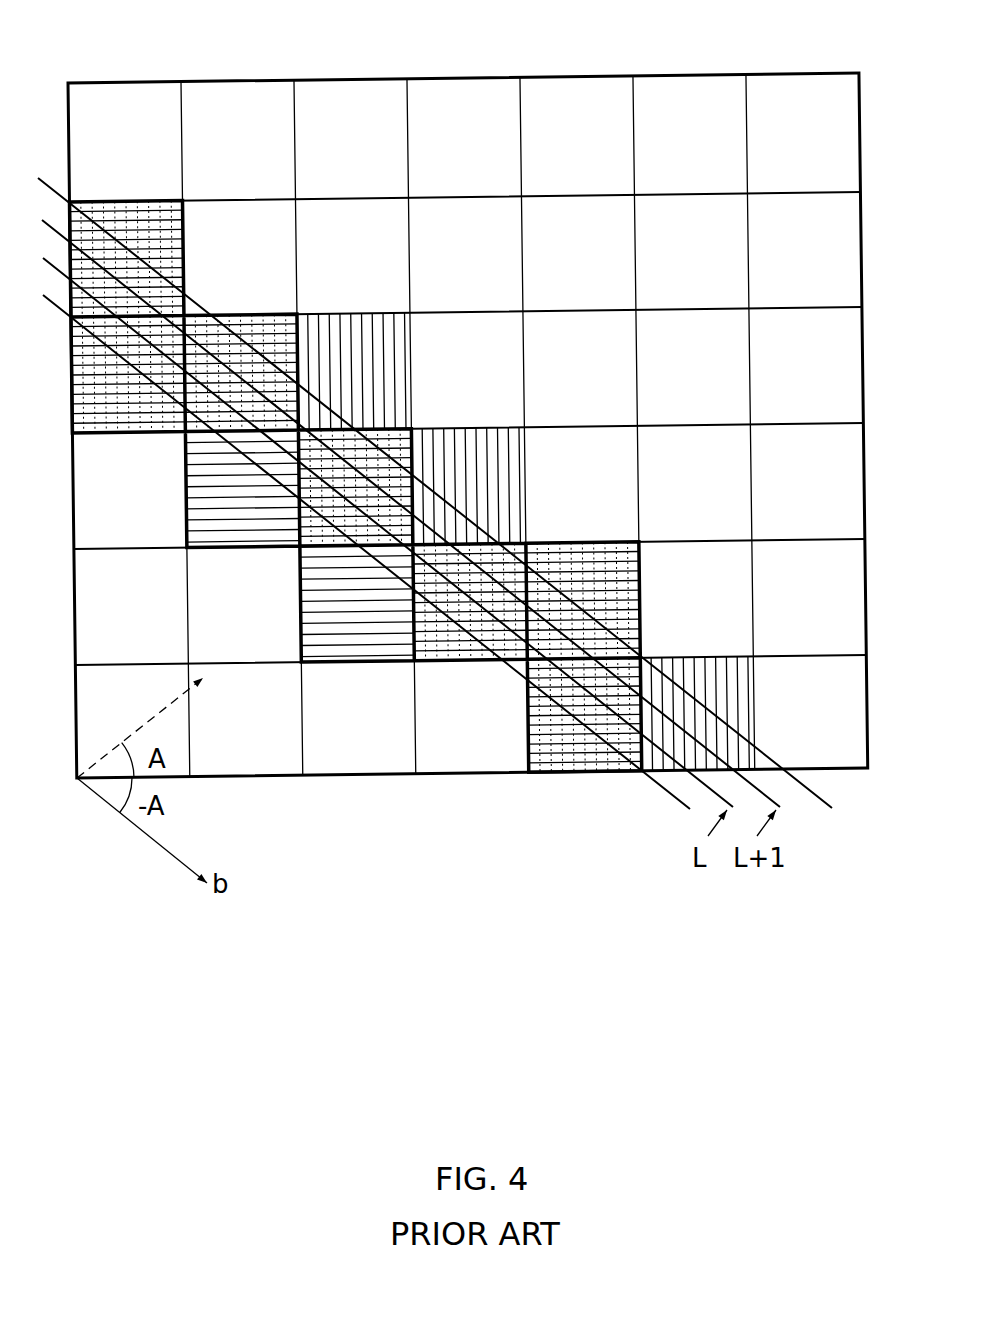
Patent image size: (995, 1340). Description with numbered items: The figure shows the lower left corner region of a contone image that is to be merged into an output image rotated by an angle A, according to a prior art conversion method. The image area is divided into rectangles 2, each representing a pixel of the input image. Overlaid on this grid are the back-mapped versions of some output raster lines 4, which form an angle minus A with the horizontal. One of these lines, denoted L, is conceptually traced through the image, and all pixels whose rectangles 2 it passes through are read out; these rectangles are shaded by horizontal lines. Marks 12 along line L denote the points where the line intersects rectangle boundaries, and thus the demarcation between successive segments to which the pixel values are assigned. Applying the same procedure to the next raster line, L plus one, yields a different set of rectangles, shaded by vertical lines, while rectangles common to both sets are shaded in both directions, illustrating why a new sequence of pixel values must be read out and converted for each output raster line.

The rectangles 2 is at (848, 272).
The back-mapped output raster lines 4 is at (178, 200).
The marks 12 is at (71, 433).